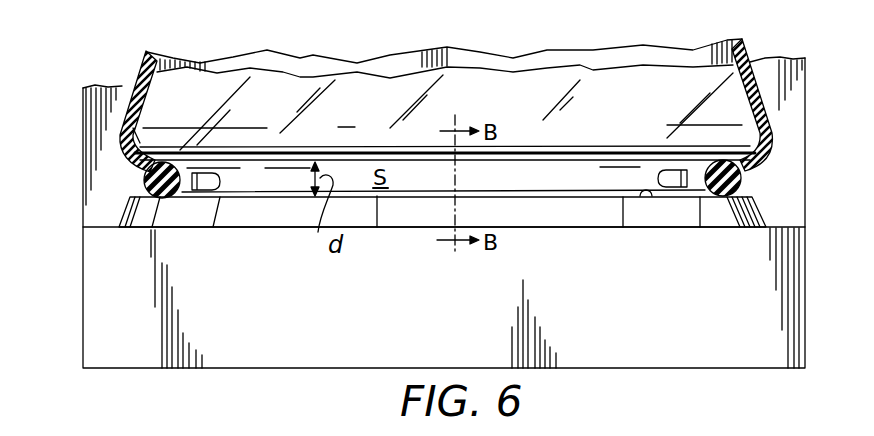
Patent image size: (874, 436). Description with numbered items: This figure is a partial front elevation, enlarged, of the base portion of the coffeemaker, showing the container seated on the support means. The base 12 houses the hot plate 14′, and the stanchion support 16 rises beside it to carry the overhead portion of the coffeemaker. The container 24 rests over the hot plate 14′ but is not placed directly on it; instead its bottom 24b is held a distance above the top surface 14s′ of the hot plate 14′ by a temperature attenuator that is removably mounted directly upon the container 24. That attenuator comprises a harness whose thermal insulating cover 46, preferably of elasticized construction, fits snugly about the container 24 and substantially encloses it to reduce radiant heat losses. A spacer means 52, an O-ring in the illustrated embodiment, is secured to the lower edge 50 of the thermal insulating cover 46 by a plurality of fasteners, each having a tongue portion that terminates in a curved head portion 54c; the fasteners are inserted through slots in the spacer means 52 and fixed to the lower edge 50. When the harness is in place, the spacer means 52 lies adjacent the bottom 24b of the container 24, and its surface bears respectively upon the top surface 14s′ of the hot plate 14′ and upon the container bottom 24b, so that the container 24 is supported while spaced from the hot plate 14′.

The base 12 is at (317, 337).
The stanchion support 16 is at (97, 152).
The container 24 is at (543, 97).
The bottom of container 24b is at (586, 162).
The thermal insulating cover 46 is at (750, 50).
The lower edge 50 is at (758, 164).
The curved head portion 54c is at (213, 183).
The hot plate 14′ is at (600, 215).
The top surface of hot plate 14s′ is at (650, 197).
The spacer means 52 is at (550, 175).